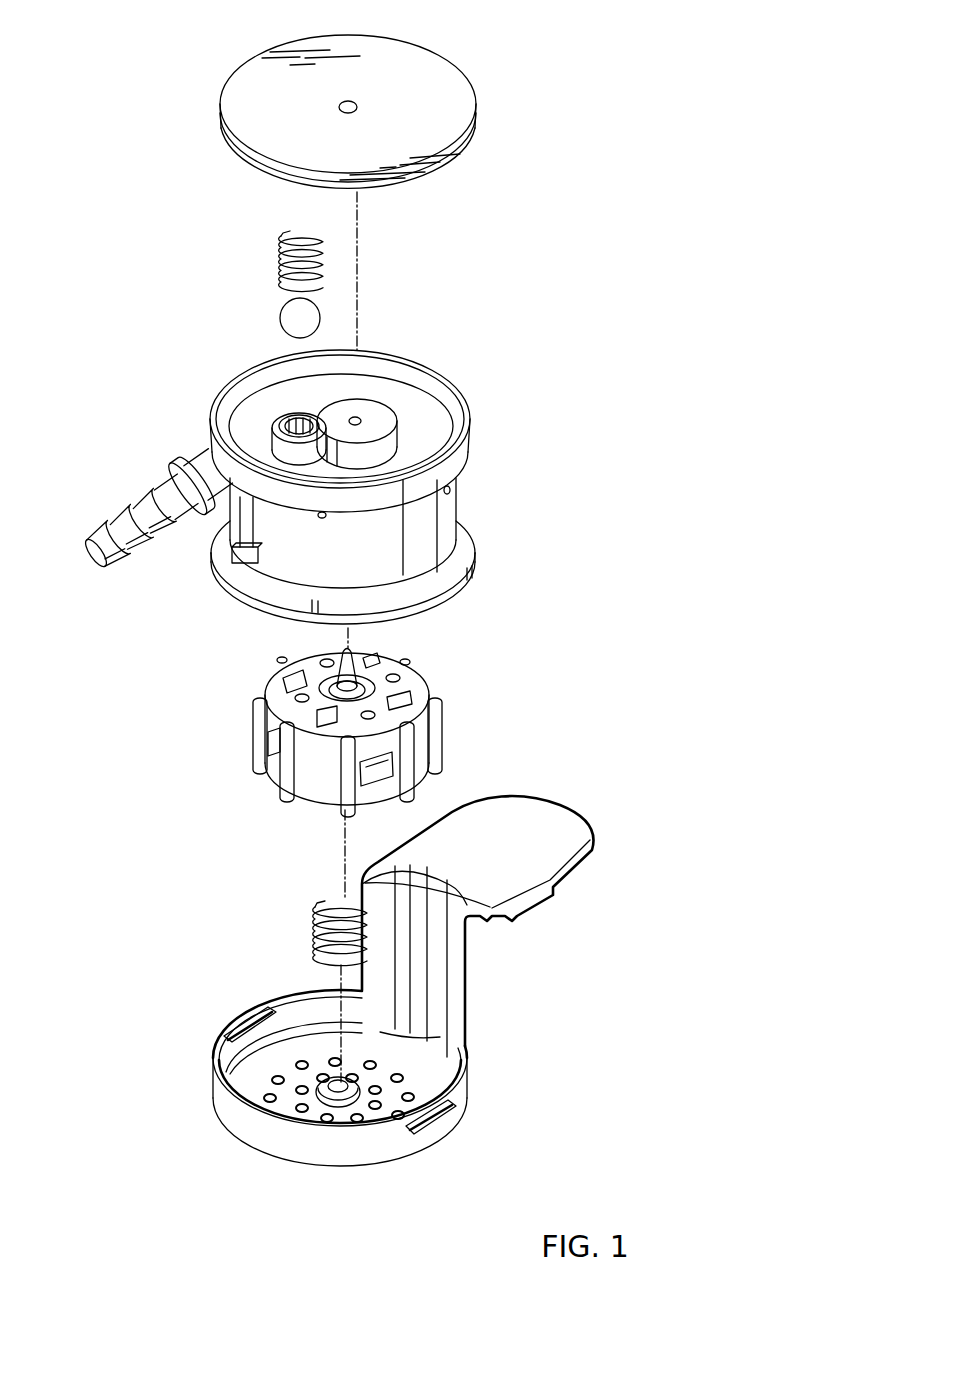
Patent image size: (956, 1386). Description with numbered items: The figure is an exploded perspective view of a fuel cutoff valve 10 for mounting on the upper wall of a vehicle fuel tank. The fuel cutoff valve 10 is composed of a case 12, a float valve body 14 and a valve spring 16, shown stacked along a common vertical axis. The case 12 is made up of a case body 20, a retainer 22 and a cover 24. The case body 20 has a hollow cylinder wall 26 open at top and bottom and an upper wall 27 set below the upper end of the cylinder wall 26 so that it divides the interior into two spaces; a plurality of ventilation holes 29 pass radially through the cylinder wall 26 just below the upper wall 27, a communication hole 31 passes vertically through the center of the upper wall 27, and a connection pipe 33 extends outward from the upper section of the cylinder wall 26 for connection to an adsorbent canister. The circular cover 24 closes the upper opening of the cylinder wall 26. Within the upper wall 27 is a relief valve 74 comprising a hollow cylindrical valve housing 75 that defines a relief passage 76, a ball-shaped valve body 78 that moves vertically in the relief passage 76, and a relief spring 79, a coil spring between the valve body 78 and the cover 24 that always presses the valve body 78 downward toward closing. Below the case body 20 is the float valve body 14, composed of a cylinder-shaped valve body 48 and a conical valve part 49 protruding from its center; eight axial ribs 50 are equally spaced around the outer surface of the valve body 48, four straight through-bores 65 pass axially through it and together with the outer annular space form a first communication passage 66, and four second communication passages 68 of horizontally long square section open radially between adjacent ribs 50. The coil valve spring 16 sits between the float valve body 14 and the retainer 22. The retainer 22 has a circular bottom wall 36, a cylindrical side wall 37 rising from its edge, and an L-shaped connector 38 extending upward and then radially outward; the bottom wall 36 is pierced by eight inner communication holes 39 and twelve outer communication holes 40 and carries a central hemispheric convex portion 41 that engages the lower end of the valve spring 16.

The fuel cutoff valve 10 is at (558, 186).
The case 12 is at (484, 331).
The float valve body 14 is at (306, 716).
The valve spring 16 is at (316, 903).
The case body 20 is at (300, 459).
The retainer 22 is at (394, 990).
The cover 24 is at (417, 68).
The cylinder wall 26 is at (443, 527).
The upper wall 27 is at (403, 400).
The ventilation holes 29 is at (450, 490).
The communication hole 31 is at (358, 415).
The connection pipe 33 is at (178, 487).
The bottom wall 36 is at (313, 1042).
The side wall 37 is at (250, 1128).
The connector 38 is at (540, 820).
The inner communication holes 39 is at (353, 1122).
The outer communication holes 40 is at (275, 1080).
The convex portion 41 is at (298, 1147).
The valve body 48 is at (297, 729).
The conical valve part 49 is at (355, 672).
The ribs 50 is at (412, 745).
The through-bores 65 is at (300, 700).
The first communication passage 66 is at (415, 683).
The second communication passages 68 is at (270, 752).
The relief valve 74 is at (257, 273).
The valve housing 75 is at (227, 399).
The relief passage 76 is at (290, 412).
The valve body 78 is at (295, 315).
The relief spring 79 is at (302, 226).